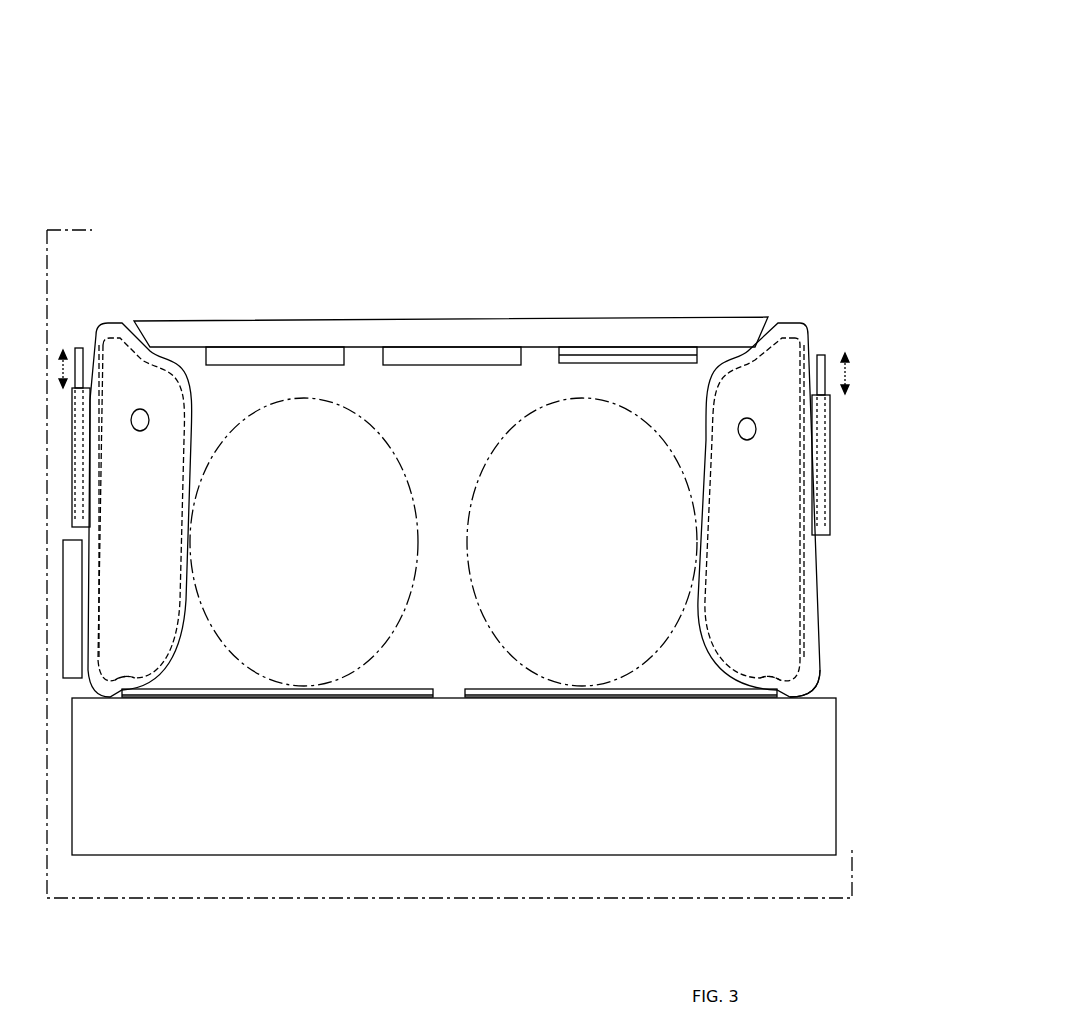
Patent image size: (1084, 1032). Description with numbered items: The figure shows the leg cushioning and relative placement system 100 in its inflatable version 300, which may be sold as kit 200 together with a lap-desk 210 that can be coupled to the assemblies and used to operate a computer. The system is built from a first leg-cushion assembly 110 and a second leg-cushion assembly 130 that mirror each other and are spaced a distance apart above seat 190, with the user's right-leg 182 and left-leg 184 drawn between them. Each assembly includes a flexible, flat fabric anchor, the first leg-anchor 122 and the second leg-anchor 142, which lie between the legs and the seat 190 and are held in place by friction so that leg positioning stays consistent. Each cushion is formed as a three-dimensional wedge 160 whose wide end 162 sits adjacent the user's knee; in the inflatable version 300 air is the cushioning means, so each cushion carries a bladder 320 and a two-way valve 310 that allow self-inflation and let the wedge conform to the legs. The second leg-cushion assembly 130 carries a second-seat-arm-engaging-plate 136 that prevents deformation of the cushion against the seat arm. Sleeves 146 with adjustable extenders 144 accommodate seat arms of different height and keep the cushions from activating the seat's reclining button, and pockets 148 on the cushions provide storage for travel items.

The leg cushioning and relative placement system 100 is at (674, 72).
The inflatable version 300 is at (689, 127).
The kit 200 is at (695, 194).
The lap-desk 210 is at (646, 319).
The adjustable extenders 144 is at (81, 346).
The pockets 148 is at (442, 368).
The sleeves 146 is at (821, 538).
The first leg-cushion assembly 110 is at (144, 625).
The second leg-cushion assembly 130 is at (755, 616).
The 3-D wedge 160 is at (149, 508).
The wide end 162 is at (169, 545).
The valve 310 is at (152, 420).
The bladder 320 is at (151, 684).
The second-seat-arm-engaging-plate 136 is at (809, 682).
The right-leg 182 is at (421, 592).
The left-leg 184 is at (464, 546).
The first leg-anchor 122 is at (342, 698).
The second leg-anchor 142 is at (568, 698).
The seat 190 is at (500, 825).